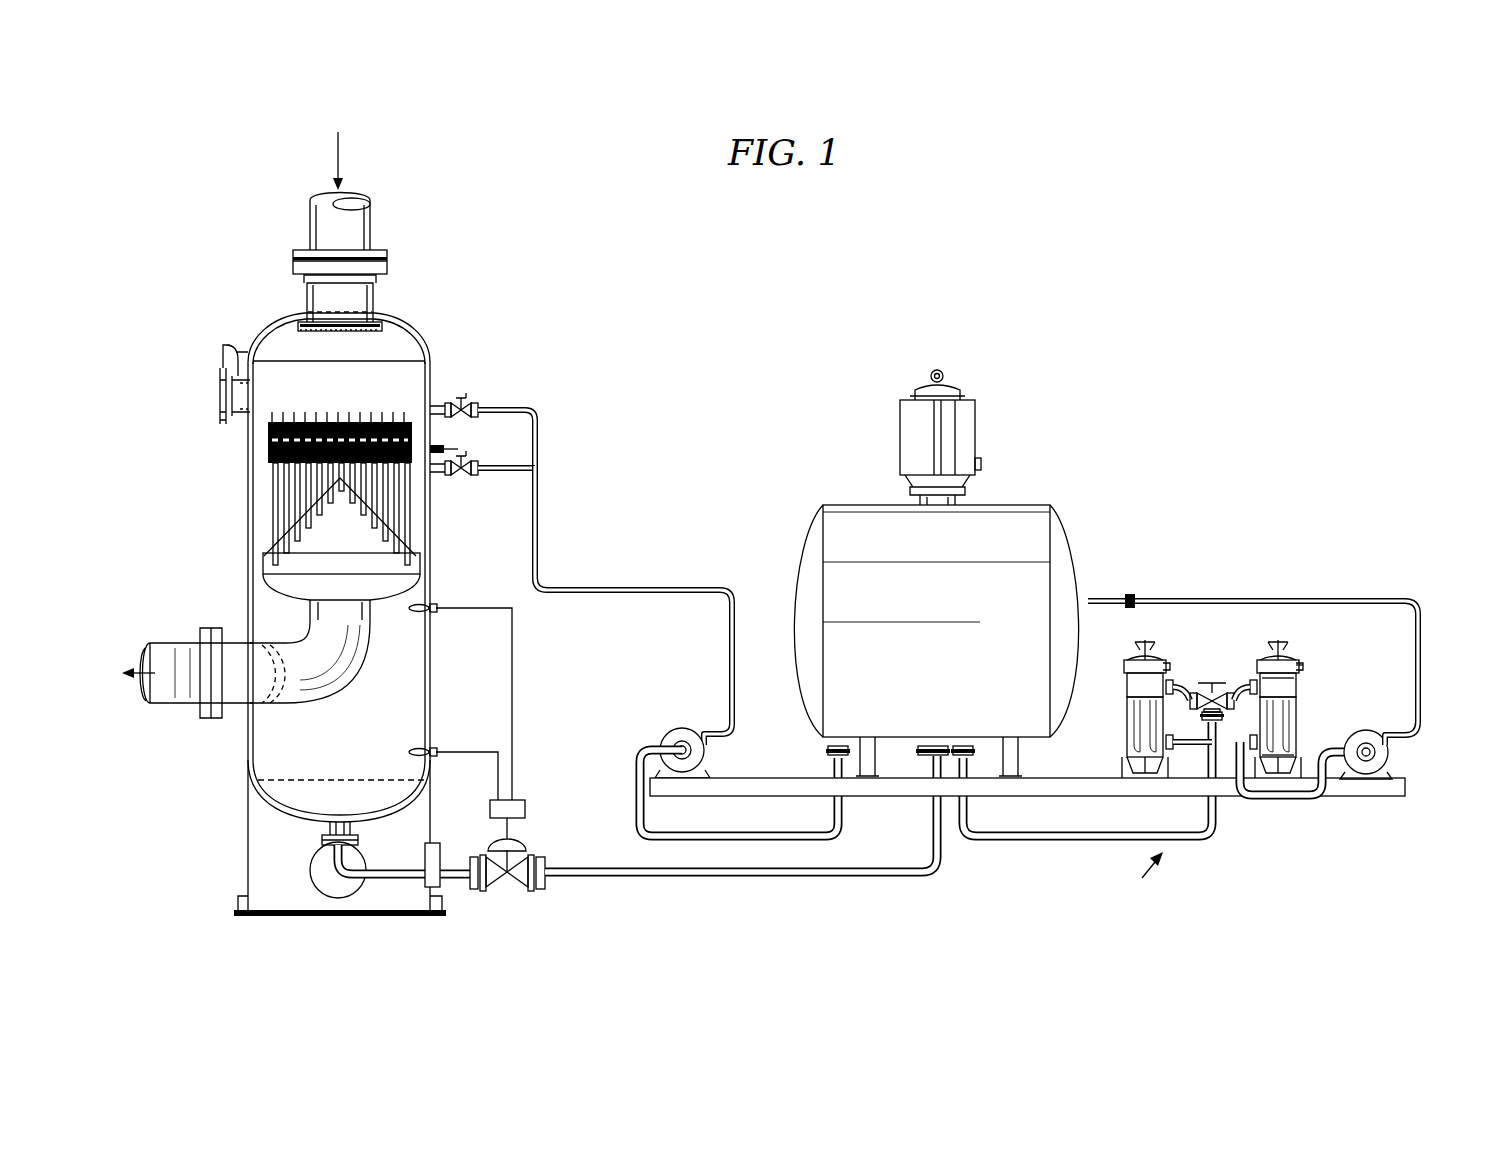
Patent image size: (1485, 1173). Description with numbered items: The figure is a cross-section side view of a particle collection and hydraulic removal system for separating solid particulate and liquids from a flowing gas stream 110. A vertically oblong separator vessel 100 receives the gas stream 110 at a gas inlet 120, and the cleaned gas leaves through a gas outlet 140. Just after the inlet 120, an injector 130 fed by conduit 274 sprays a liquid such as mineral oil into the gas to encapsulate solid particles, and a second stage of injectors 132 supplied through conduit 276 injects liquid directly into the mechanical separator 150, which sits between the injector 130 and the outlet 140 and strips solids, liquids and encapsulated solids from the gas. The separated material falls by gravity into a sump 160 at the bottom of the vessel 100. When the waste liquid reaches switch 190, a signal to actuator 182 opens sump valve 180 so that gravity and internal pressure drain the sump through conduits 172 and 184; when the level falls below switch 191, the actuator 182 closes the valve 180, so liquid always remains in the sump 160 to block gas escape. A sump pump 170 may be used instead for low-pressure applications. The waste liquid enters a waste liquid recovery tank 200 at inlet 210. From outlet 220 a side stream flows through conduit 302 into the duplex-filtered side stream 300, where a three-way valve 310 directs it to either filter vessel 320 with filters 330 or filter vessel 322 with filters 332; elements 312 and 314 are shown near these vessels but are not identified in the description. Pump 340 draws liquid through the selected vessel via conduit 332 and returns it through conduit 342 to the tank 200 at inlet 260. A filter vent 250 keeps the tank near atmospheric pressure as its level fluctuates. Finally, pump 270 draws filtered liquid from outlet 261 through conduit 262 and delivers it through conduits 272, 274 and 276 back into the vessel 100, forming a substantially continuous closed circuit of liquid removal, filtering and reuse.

The separator vessel 100 is at (258, 335).
The gas stream 110 is at (338, 148).
The gas inlet 120 is at (395, 300).
The injector 130 is at (385, 340).
The injectors 132 is at (430, 488).
The gas outlet 140 is at (248, 640).
The separator 150 is at (262, 498).
The sump 160 is at (305, 768).
The sump pump 170 is at (330, 880).
The conduit 172 is at (400, 862).
The sump valve 180 is at (507, 878).
The actuator 182 is at (525, 846).
The conduit 184 is at (783, 868).
The switch 190 is at (440, 600).
The switch 191 is at (440, 745).
The waste liquid recovery tank 200 is at (820, 508).
The inlet 210 is at (932, 740).
The outlet 220 is at (965, 742).
The filter vent 250 is at (918, 380).
The inlet 260 is at (1085, 600).
The outlet 261 is at (840, 742).
The conduit 262 is at (715, 830).
The pump 270 is at (662, 732).
The conduit 272 is at (645, 590).
The conduit 274 is at (505, 409).
The conduit 276 is at (505, 468).
The duplex-filtered side stream 300 is at (1142, 878).
The conduit 302 is at (1065, 838).
The three-way valve 310 is at (1240, 634).
The filter housing 312 is at (1285, 680).
The diverter valve 314 is at (1195, 680).
The filter vessel 320 is at (1300, 655).
The filter vessel 322 is at (1130, 660).
The filters 330 is at (1290, 735).
The filters 332 is at (1133, 718).
The pump 340 is at (1388, 752).
The conduit 342 is at (1335, 600).